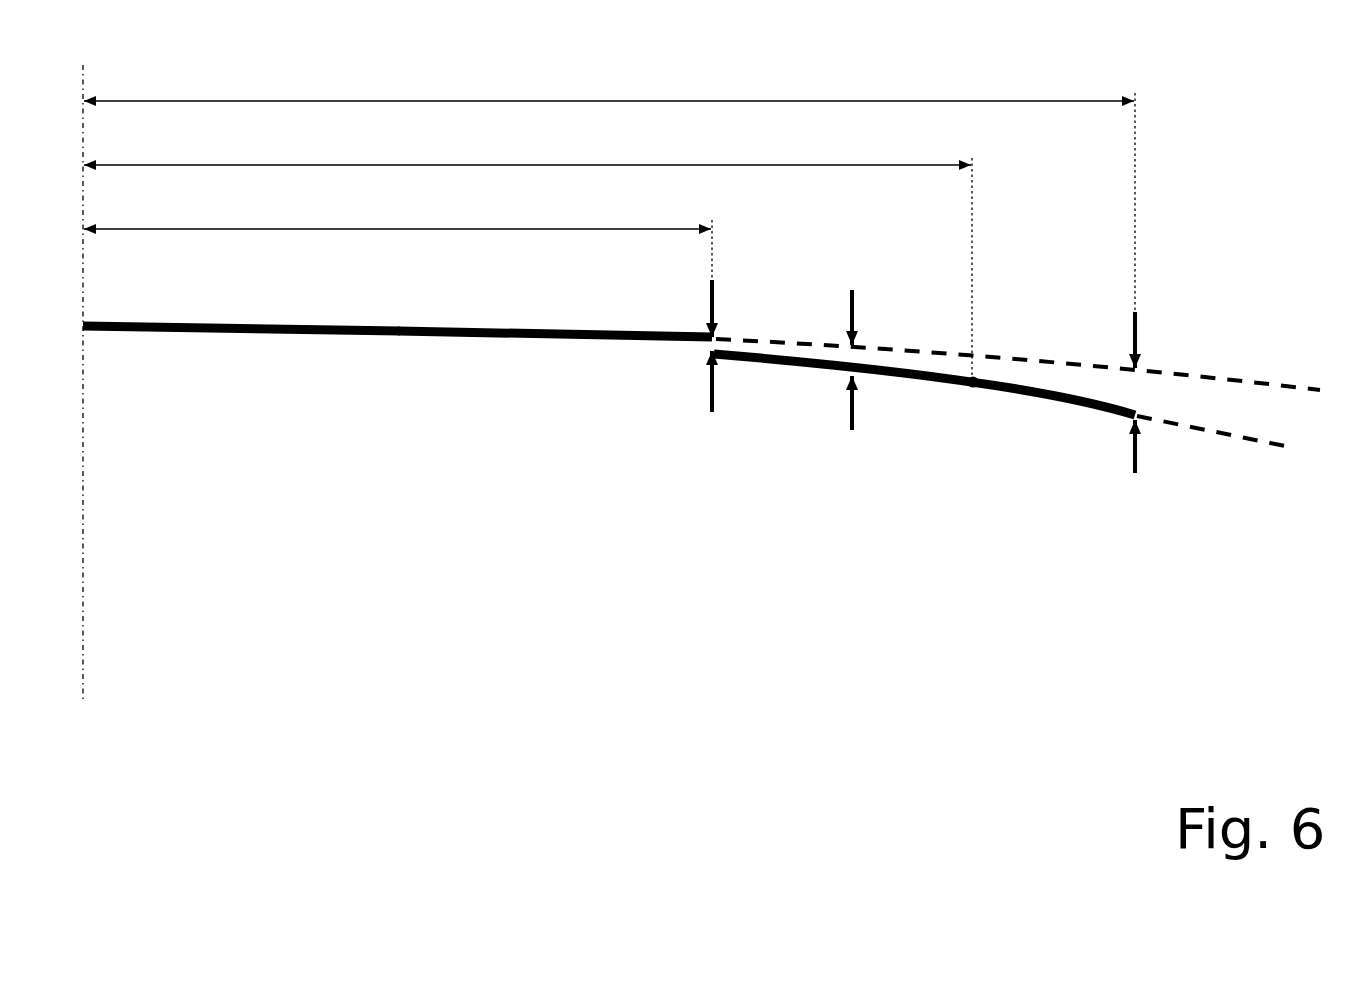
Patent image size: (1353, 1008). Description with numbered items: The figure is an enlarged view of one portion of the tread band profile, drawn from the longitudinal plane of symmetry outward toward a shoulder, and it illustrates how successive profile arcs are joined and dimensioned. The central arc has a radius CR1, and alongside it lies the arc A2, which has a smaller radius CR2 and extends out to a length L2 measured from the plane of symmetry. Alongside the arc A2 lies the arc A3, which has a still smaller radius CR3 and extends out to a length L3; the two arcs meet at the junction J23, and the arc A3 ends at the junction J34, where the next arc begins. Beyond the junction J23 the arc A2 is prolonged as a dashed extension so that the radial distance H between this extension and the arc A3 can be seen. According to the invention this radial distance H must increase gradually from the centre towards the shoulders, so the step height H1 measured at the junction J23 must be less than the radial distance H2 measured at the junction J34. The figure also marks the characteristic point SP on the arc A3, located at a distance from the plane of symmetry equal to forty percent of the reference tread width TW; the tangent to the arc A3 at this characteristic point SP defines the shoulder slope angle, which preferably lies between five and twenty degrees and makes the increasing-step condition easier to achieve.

The length L3 is at (609, 90).
The reference tread width TW is at (527, 153).
The length L2 is at (397, 218).
The radius CR1 is at (241, 434).
The radius CR2 is at (555, 446).
The radius CR3 is at (924, 478).
The characteristic point SP is at (975, 376).
The junction J23 is at (700, 320).
The junction J34 is at (1131, 392).
The radial distance H1 is at (715, 293).
The radial distance H is at (855, 303).
The radial distance H2 is at (1138, 326).
The arc A2 is at (517, 306).
The arc A3 is at (1024, 270).